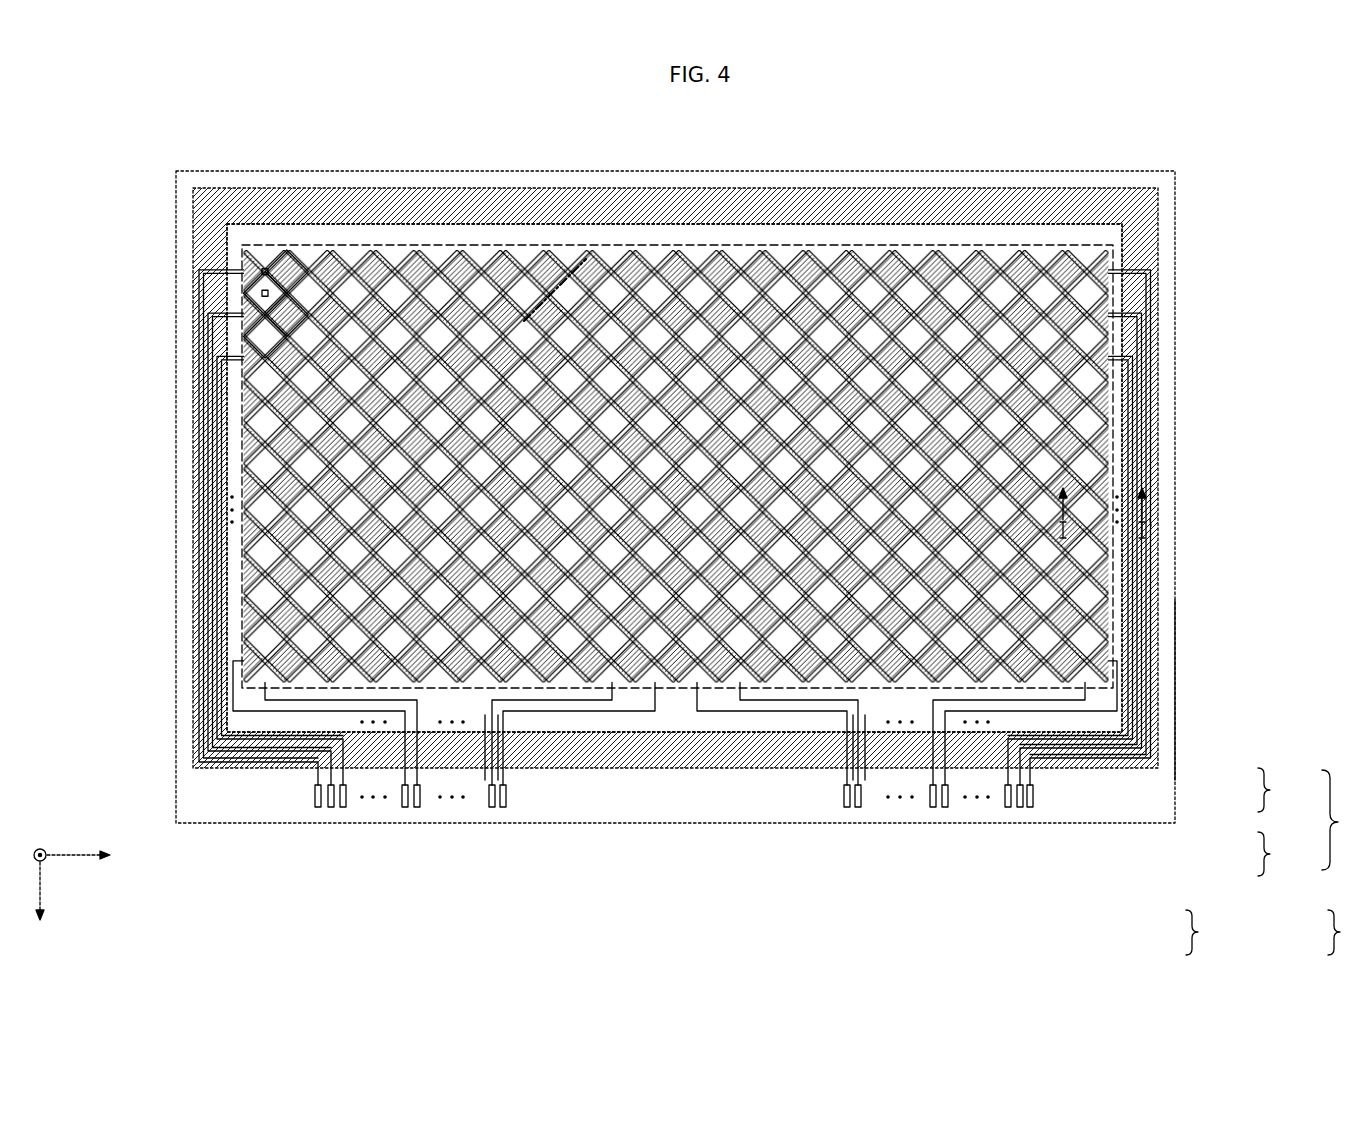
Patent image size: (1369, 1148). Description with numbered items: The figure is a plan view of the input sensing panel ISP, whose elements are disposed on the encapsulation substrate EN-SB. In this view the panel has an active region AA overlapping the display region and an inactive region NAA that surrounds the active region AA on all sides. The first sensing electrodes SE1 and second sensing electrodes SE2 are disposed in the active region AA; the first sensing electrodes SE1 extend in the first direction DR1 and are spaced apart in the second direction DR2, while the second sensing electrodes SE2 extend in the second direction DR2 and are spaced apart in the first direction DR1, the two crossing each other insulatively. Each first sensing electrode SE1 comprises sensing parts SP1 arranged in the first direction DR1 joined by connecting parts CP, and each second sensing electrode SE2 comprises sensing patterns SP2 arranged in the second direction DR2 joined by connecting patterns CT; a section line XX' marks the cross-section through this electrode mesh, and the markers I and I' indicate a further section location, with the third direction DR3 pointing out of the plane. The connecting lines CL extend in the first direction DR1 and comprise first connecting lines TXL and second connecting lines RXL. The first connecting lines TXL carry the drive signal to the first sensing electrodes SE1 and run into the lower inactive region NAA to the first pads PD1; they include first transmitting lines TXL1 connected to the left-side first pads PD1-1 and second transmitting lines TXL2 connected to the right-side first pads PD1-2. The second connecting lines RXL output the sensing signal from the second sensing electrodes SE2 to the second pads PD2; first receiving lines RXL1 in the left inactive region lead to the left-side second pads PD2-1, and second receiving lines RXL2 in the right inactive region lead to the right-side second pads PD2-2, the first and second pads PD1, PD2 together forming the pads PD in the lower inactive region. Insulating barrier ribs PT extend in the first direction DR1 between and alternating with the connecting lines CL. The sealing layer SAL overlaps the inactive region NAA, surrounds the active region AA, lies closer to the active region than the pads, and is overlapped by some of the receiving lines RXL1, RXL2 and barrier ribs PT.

The input sensing panel ISP is at (1146, 154).
The inactive region NAA is at (910, 231).
The active region AA is at (840, 245).
The sealing layer SAL is at (1157, 590).
The encapsulation substrate EN-SB is at (1176, 690).
The first sensing electrode SE1 is at (330, 110).
The connecting part CP is at (249, 258).
The sensing part SP1 is at (274, 258).
The section line X-X' XX' is at (555, 217).
The second sensing electrode SE2 is at (90, 285).
The sensing pattern SP2 is at (262, 306).
The connecting pattern CT is at (258, 314).
The first receiving line RXL1 is at (200, 398).
The second receiving line RXL2 is at (1157, 316).
The first transmitting line TXL1 is at (618, 713).
The second transmitting line TXL2 is at (725, 713).
The barrier rib PT is at (507, 808).
The 1-1 pad PD1-1 is at (413, 808).
The 1-2 pad PD1-2 is at (930, 808).
The 2-1 pad PD2-1 is at (318, 808).
The 2-2 pad PD2-2 is at (946, 808).
The section marker I is at (1063, 513).
The section marker I' is at (1144, 513).
The first connecting line TXL is at (1288, 790).
The second connecting line RXL is at (1288, 854).
The connecting line CL is at (1344, 820).
The first pad PD1 is at (1216, 932).
The second pad PD2 is at (1334, 932).
The pads PD is at (1355, 934).
The first direction DR1 is at (40, 907).
The second direction DR2 is at (102, 856).
The third direction DR3 is at (40, 841).